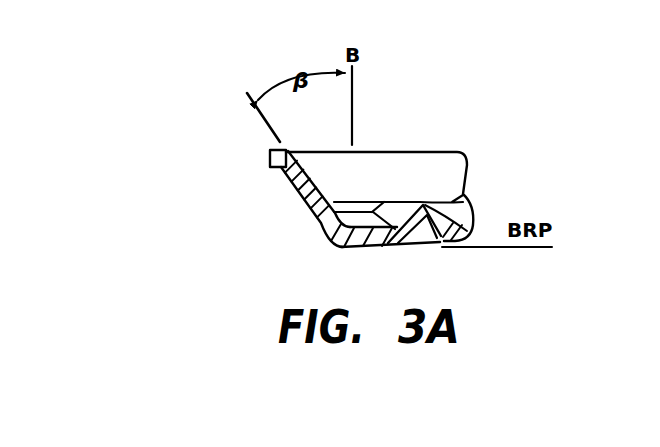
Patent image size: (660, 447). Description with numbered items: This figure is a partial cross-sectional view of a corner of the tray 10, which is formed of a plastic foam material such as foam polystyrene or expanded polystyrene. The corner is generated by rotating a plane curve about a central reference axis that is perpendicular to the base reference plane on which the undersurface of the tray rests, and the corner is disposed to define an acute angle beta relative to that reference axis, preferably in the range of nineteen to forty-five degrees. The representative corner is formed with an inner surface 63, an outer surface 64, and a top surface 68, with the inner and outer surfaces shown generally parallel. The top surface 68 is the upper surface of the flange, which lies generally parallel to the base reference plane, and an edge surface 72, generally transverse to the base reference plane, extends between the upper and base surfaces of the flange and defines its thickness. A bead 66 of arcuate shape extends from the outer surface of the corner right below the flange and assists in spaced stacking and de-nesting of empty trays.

The tray 10 is at (499, 107).
The inner surface 63 is at (305, 188).
The outer surface 64 is at (318, 220).
The bead 66 is at (283, 170).
The top surface 68 is at (278, 142).
The edge surface 72 is at (268, 158).